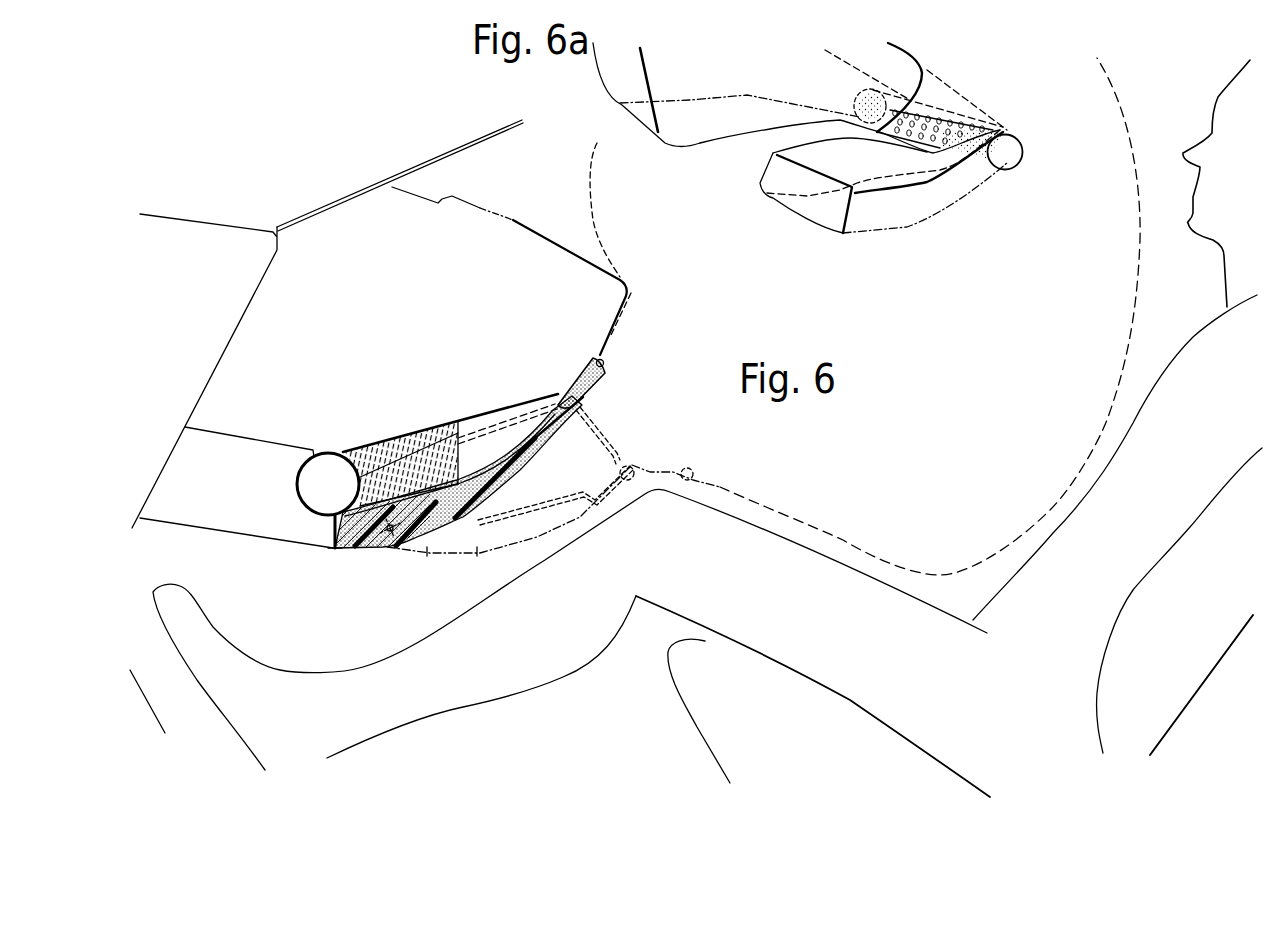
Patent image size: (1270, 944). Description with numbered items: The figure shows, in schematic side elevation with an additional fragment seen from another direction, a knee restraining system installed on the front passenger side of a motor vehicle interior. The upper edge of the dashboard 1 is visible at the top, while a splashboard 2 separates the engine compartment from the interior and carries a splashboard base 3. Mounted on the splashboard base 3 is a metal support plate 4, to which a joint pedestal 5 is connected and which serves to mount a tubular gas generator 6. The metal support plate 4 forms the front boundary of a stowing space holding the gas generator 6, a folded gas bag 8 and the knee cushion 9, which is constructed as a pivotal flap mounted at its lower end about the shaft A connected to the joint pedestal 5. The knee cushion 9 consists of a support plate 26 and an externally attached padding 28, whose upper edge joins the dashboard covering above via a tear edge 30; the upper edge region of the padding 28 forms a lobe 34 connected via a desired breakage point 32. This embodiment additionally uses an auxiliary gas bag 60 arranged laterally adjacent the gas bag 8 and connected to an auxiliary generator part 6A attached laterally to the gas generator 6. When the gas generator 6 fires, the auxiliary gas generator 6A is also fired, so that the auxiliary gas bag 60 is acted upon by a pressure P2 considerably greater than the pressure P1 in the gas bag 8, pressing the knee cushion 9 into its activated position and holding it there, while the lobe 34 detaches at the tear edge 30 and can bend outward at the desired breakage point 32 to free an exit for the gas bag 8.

In FIG. 6, the upper edge of the dashboard 1 is at (631, 287).
In FIG. 6, the splashboard 2 is at (219, 355).
In FIG. 6, the splashboard base 3 is at (207, 432).
In FIG. 6, the metal support plate 4 is at (297, 483).
In FIG. 6, the joint pedestal 5 is at (340, 552).
In FIG. 6, the tubular gas generator 6 is at (313, 490).
In FIG. 6a, the tubular gas generator 6 is at (856, 104).
In FIG. 6a, the auxiliary generator part 6A is at (1008, 158).
In FIG. 6, the gas bag 8 is at (392, 442).
In FIG. 6a, the gas bag 8 is at (695, 140).
In FIG. 6, the knee cushion 9 is at (477, 552).
In FIG. 6, the support plate 26 is at (492, 470).
In FIG. 6, the padding 28 is at (423, 553).
In FIG. 6, the tear edge 30 is at (604, 363).
In FIG. 6, the desired breakage point 32 is at (562, 393).
In FIG. 6, the lobe 34 is at (593, 383).
In FIG. 6, the auxiliary gas bag 60 is at (455, 445).
In FIG. 6a, the auxiliary gas bag 60 is at (885, 235).
In FIG. 6, the shaft A is at (389, 548).
In FIG. 6a, the pressure in the gas bag P1 is at (721, 119).
In FIG. 6a, the pressure in the auxiliary gas bag P2 is at (898, 215).